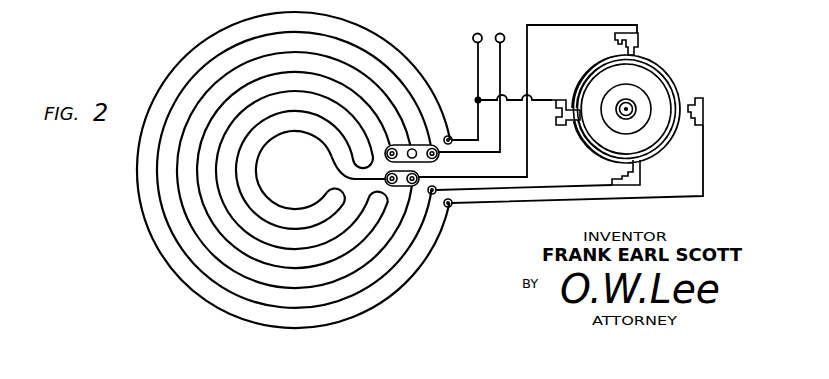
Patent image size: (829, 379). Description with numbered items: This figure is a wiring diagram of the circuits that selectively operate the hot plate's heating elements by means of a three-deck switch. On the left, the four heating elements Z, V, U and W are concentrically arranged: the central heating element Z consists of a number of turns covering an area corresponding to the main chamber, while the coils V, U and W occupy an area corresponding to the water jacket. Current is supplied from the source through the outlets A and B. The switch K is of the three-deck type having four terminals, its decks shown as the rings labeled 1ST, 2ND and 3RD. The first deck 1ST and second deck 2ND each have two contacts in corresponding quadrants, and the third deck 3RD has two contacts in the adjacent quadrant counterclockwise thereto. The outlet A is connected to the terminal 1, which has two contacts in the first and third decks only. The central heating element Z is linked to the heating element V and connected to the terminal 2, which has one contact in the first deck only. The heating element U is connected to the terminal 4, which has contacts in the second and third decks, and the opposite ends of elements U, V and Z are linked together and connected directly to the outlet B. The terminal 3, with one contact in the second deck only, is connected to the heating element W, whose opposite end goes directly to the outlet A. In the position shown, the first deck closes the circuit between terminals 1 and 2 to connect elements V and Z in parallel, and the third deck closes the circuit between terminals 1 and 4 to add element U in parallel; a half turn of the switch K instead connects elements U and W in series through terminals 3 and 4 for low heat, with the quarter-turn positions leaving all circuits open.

The central heating element Z is at (329, 160).
The heating element V is at (397, 229).
The heating element U is at (419, 229).
The heating element W is at (436, 242).
The outlet A is at (477, 29).
The outlet B is at (499, 29).
The switch K is at (640, 99).
The 1st deck 1ST is at (650, 56).
The 2d deck 2ND is at (665, 72).
The 3d deck 3RD is at (677, 88).
The terminal 1 is at (559, 127).
The terminal 2 is at (615, 38).
The terminal 3 is at (705, 107).
The terminal 4 is at (640, 182).